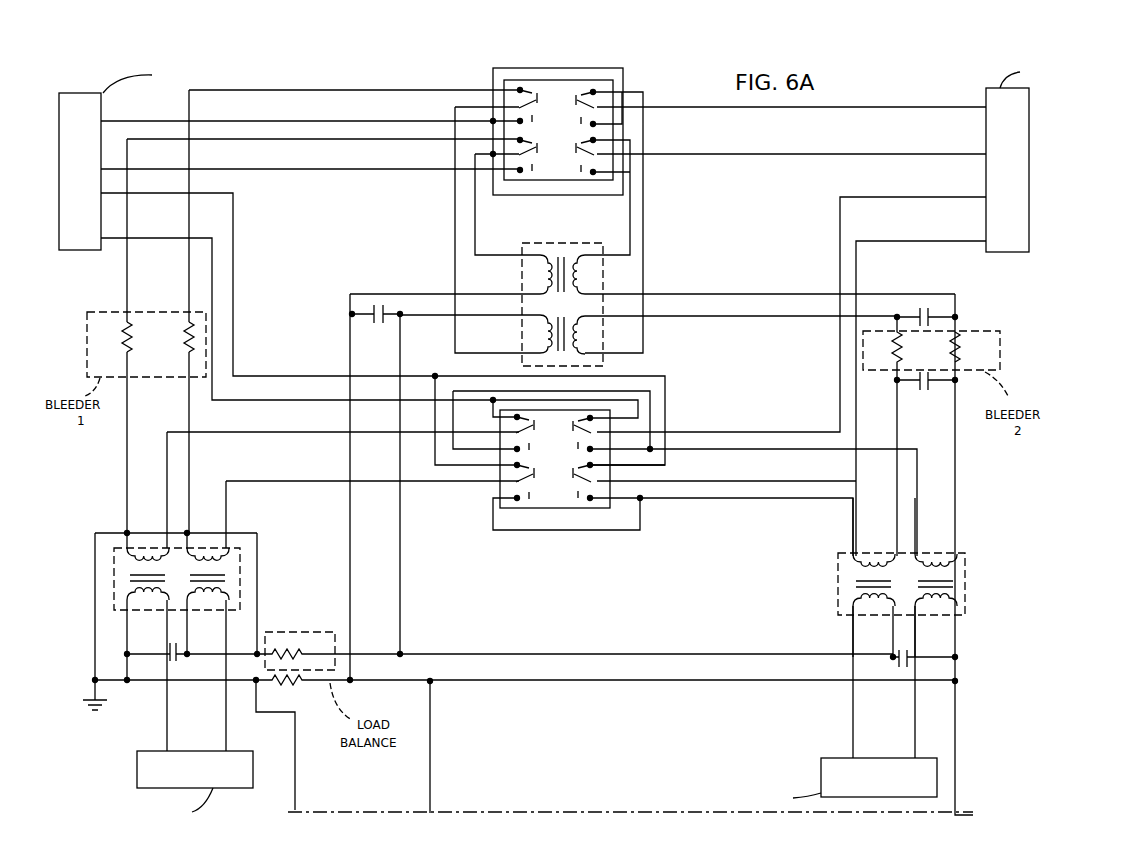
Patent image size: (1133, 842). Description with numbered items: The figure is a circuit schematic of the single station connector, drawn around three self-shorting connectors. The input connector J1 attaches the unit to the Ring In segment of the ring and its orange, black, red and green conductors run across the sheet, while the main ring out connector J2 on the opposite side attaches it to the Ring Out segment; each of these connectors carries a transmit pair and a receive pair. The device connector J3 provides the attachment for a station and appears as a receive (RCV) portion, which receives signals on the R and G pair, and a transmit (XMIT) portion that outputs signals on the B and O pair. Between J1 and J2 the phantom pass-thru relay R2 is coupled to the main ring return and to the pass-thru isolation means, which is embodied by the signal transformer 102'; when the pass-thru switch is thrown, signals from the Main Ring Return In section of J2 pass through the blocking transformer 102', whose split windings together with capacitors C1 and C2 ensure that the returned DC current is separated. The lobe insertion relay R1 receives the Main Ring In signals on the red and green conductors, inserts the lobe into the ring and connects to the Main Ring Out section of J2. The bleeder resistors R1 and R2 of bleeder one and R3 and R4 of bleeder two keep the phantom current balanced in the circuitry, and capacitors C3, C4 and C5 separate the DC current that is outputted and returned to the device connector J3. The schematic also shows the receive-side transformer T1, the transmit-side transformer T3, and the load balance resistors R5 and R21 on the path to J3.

The signal transformer 102' is at (652, 296).
The lobe insertion relay R1 is at (386, 425).
The phantom pass-thru relay R2 is at (358, 214).
The bleeder resistor R3 is at (967, 347).
The bleeder resistor R4 is at (884, 348).
The load balance resistor R5 is at (525, 690).
The load balance resistor R21 is at (540, 651).
The capacitor C1 is at (376, 324).
The capacitor C2 is at (925, 311).
The capacitor C3 is at (160, 660).
The capacitor C4 is at (915, 664).
The capacitor C5 is at (925, 389).
The receive transformer T1 is at (113, 610).
The transmit transformer T3 is at (838, 590).
The input connector J1 is at (58, 118).
The main ring out connector J2 is at (1030, 119).
The device connector J3 is at (137, 772).